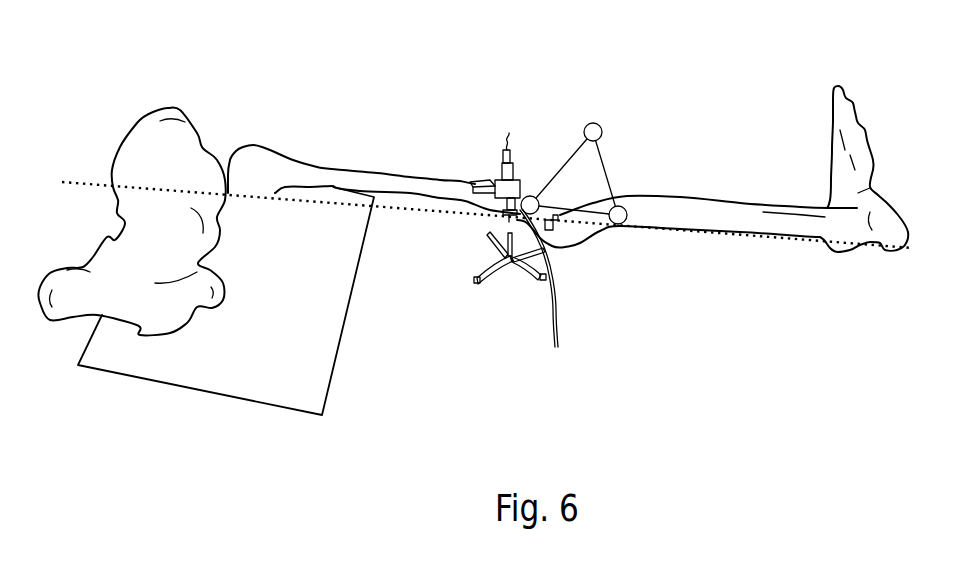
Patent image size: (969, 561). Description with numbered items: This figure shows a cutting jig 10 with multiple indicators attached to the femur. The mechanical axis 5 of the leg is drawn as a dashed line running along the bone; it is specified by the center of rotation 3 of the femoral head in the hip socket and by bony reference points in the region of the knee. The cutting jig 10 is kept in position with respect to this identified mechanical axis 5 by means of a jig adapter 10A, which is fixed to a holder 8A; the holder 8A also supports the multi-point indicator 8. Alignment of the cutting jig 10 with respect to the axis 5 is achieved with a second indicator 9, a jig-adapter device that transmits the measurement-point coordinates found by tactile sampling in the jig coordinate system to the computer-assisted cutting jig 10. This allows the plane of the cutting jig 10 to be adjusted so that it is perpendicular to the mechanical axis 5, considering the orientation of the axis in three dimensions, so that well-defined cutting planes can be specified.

The center of rotation 3 is at (243, 143).
The mechanical axis 5 is at (152, 190).
The multi-point indicator 8 is at (548, 288).
The holder 8A is at (493, 215).
The second indicator 9 is at (588, 170).
The cutting jig 10 is at (495, 128).
The jig adapter 10A is at (497, 180).